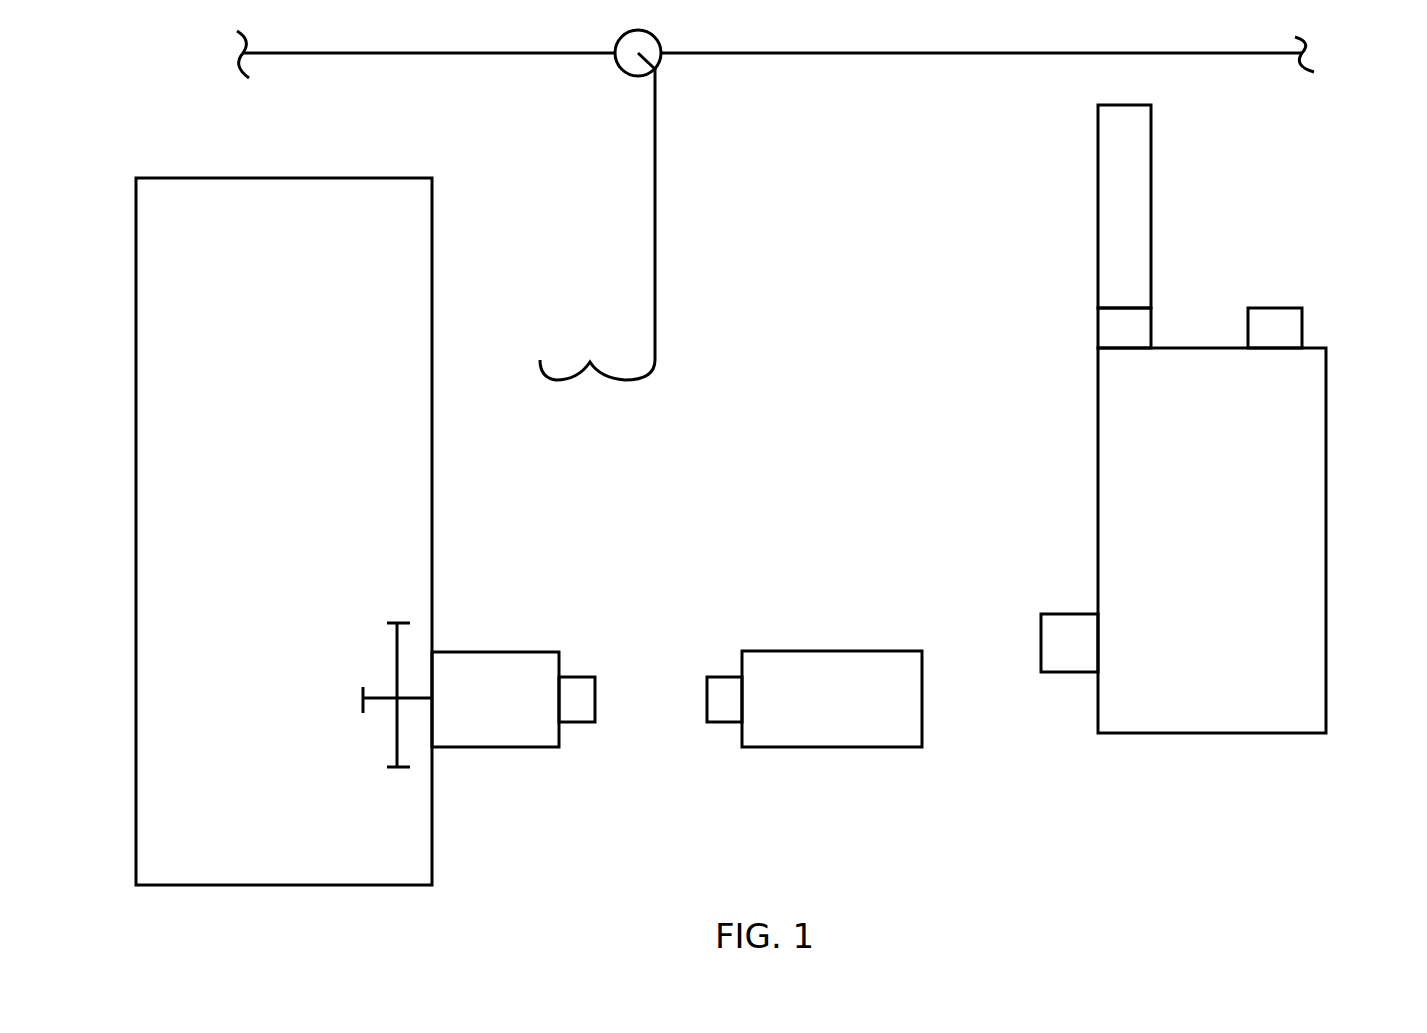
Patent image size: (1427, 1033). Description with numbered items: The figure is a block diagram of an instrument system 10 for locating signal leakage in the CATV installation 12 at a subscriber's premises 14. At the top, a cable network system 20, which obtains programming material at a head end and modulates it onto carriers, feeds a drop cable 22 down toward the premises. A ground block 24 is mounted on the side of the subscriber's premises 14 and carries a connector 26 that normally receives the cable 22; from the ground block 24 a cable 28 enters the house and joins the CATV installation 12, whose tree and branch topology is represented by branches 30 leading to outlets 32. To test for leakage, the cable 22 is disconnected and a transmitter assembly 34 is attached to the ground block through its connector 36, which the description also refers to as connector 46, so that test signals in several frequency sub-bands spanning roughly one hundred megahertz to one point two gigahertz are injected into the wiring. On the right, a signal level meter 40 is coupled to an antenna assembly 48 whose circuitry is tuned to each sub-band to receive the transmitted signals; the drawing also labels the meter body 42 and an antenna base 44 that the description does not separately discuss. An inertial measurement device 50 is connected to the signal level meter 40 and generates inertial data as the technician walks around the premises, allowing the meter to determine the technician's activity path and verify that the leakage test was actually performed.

The instrument system 10 is at (895, 361).
The CATV installation 12 is at (312, 632).
The subscriber's premises 14 is at (377, 178).
The cable network system 20 is at (739, 144).
The cable 22 is at (655, 237).
The ground block 24 is at (522, 652).
The connector 26 is at (581, 677).
The cable 28 is at (413, 698).
The branches 30 is at (395, 666).
The outlets 32 is at (363, 707).
The transmitter assembly 34 is at (908, 634).
The connector 36 is at (722, 677).
The signal level meter 40 is at (1386, 484).
The signal level meter 42 is at (1326, 392).
The antenna base 44 is at (1151, 327).
The connector 46 is at (1282, 308).
The antenna assembly 48 is at (1151, 208).
The inertial measurement device 50 is at (1068, 614).